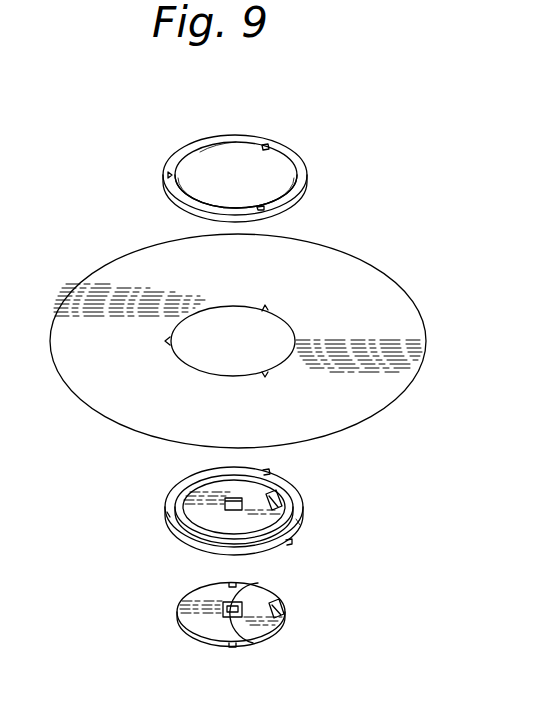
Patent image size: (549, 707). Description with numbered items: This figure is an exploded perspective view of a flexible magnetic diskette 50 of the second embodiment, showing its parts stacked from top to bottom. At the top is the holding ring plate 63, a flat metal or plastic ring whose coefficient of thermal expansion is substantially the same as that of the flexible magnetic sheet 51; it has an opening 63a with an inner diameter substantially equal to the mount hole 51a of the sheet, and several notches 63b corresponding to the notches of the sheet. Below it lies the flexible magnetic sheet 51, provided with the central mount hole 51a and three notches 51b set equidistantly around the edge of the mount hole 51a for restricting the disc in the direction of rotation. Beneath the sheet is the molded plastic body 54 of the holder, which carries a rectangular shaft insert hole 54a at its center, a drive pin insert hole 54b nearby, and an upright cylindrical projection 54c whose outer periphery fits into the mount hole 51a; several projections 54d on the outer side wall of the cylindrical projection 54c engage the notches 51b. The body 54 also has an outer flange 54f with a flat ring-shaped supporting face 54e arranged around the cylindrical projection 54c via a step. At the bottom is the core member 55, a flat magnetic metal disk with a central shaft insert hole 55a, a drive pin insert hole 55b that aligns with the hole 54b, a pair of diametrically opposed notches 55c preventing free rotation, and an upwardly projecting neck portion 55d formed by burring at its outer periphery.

The diskette 50 is at (331, 159).
The flexible magnetic sheet 51 is at (112, 258).
The mount hole 51a is at (285, 335).
The notches 51b is at (264, 313).
The body 54 is at (172, 477).
The shaft insert hole 54a is at (243, 503).
The drive pin insert hole 54b is at (283, 505).
The cylindrical projection 54c is at (178, 535).
The projections 54d is at (269, 471).
The supporting face 54e is at (298, 517).
The outer flange 54f is at (292, 540).
The core member 55 is at (178, 595).
The shaft insert hole 55a is at (238, 605).
The drive pin insert hole 55b is at (283, 615).
The notches 55c is at (232, 580).
The neck portion 55d is at (252, 643).
The holding ring plate 63 is at (168, 161).
The opening 63a is at (205, 153).
The notches 63b is at (264, 151).